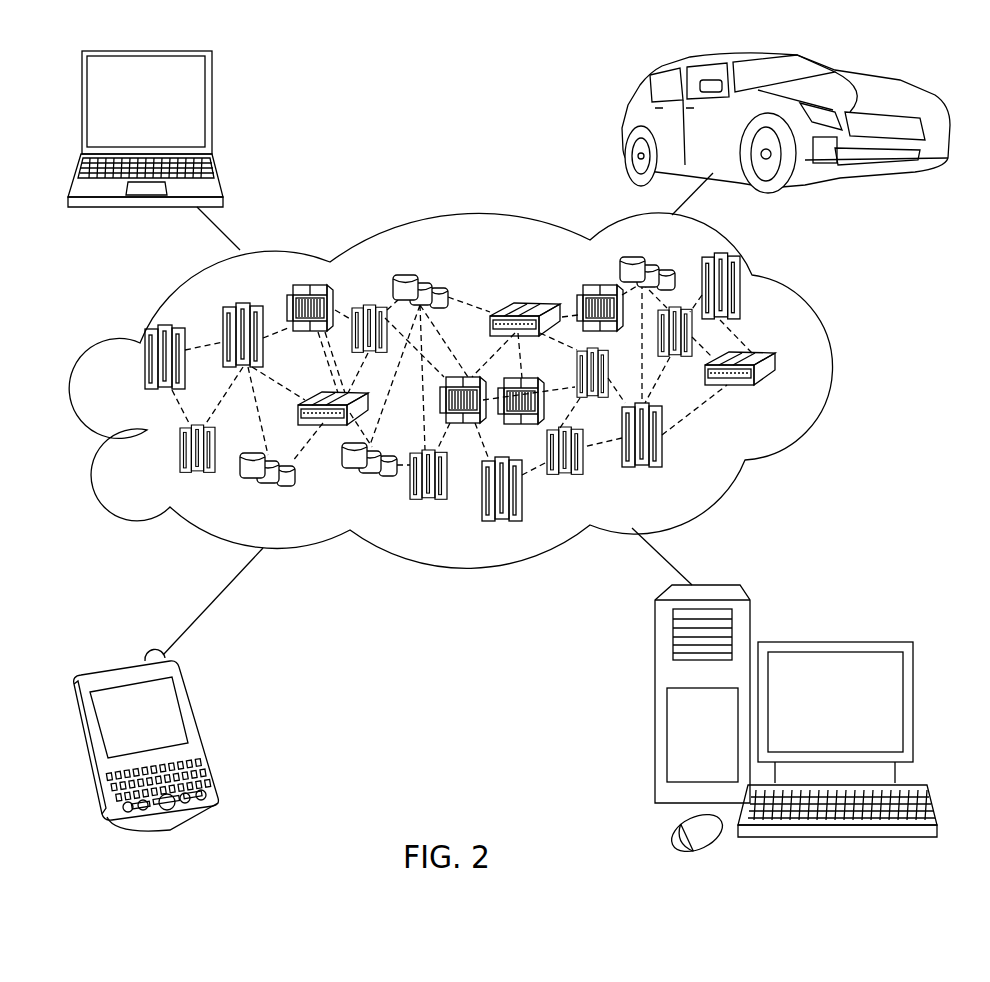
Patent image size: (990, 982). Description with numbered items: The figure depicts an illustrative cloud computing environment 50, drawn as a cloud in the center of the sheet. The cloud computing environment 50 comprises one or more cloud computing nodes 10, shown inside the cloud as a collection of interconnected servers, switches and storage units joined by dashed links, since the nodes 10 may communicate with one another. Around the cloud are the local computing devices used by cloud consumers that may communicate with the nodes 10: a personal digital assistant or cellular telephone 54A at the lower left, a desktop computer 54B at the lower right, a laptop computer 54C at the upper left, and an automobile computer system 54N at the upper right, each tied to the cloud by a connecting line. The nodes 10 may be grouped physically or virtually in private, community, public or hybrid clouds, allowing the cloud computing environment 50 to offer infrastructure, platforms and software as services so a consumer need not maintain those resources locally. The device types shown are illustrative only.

The cloud computing node 10 is at (790, 400).
The cloud computing environment 50 is at (832, 363).
The personal digital assistant or cellular telephone 54A is at (202, 728).
The desktop computer 54B is at (832, 642).
The laptop computer 54C is at (212, 110).
The automobile computer system 54N is at (626, 124).